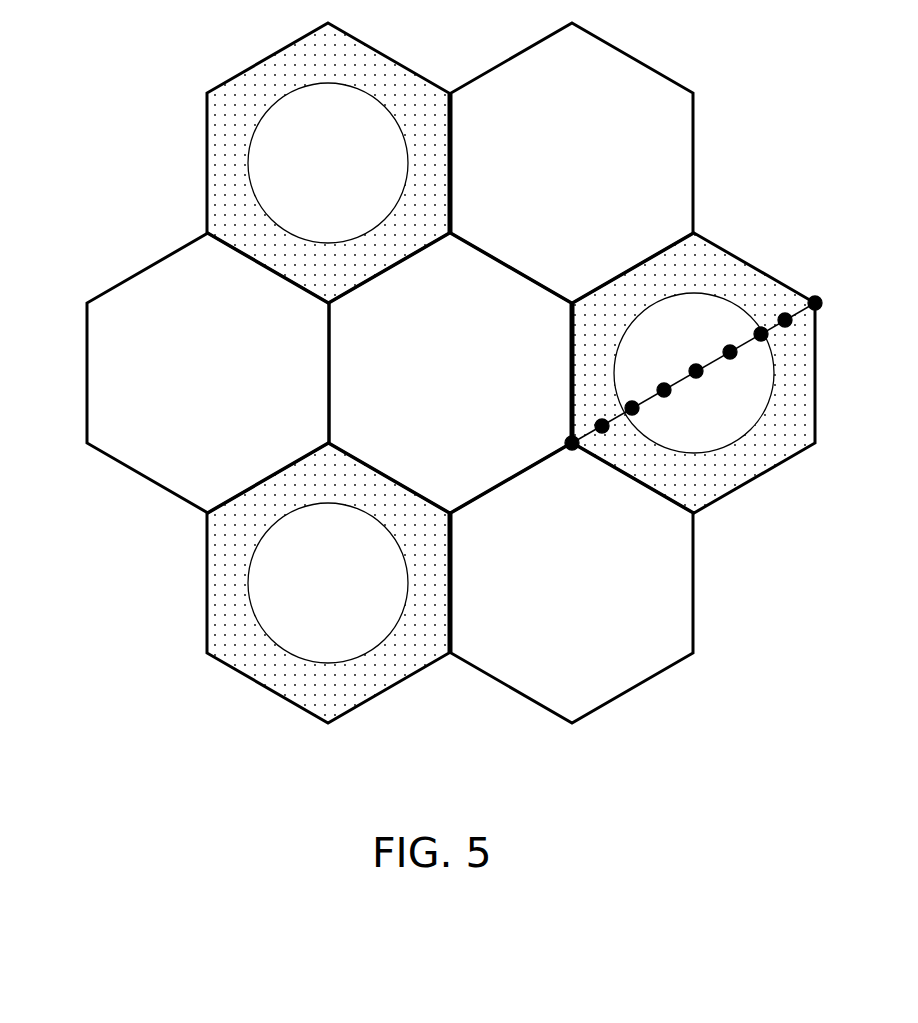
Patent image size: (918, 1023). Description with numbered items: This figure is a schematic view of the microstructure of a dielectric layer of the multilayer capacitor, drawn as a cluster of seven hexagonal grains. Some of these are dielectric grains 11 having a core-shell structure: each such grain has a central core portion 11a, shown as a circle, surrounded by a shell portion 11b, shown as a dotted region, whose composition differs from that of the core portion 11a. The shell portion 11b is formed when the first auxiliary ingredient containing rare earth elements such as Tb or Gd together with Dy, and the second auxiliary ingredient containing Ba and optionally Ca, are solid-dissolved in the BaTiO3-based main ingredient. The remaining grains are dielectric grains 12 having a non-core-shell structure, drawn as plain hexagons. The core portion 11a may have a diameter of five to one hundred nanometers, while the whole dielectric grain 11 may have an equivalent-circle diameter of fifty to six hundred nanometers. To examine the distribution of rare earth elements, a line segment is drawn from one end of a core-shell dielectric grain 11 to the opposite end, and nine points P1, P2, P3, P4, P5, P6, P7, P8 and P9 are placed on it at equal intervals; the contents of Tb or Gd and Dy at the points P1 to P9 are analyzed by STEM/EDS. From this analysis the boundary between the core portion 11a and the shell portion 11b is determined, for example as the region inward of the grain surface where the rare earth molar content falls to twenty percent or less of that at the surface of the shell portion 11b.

The dielectric grain 11 is at (445, 373).
The core portion 11a is at (277, 133).
The shell portion 11b is at (223, 177).
The dielectric grain 12 is at (98, 374).
The point P1 is at (568, 457).
The point P2 is at (600, 414).
The point P3 is at (646, 419).
The point P4 is at (660, 377).
The point P5 is at (708, 384).
The point P6 is at (723, 339).
The point P7 is at (769, 347).
The point P8 is at (776, 308).
The point P9 is at (832, 304).